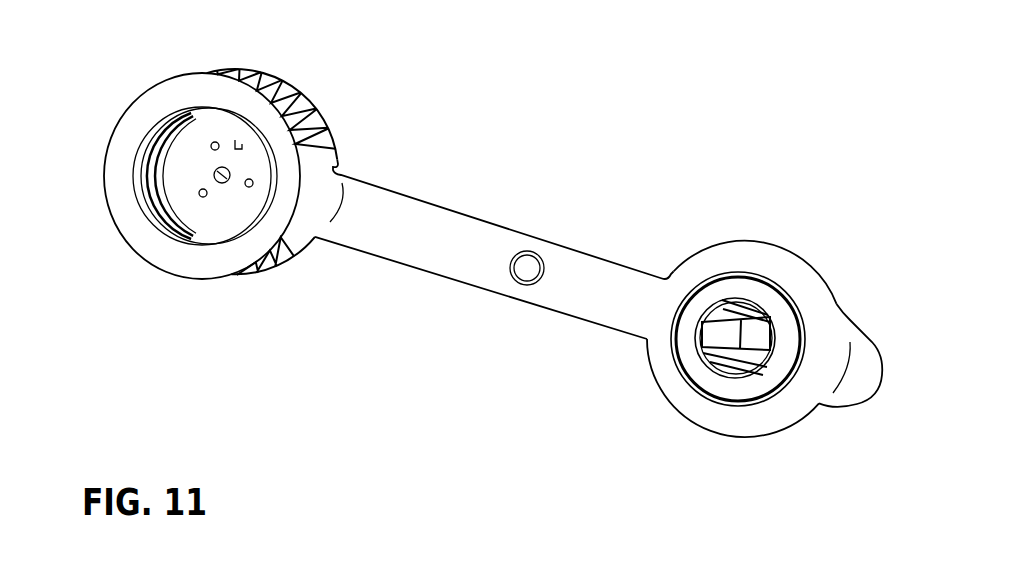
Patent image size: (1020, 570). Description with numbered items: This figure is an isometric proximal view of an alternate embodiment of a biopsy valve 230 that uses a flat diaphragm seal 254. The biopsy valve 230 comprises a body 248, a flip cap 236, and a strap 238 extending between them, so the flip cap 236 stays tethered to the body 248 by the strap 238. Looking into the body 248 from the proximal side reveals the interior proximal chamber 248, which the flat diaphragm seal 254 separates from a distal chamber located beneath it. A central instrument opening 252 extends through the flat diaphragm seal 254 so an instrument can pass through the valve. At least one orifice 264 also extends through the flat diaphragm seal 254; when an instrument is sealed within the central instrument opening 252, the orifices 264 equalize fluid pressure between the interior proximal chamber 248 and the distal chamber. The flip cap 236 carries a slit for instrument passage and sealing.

The biopsy valve 230 is at (632, 115).
The body 248 is at (135, 103).
The orifice 264 is at (213, 143).
The flat diaphragm seal 254 is at (238, 145).
The central instrument opening 252 is at (226, 180).
The strap 238 is at (448, 238).
The flip cap 236 is at (740, 413).